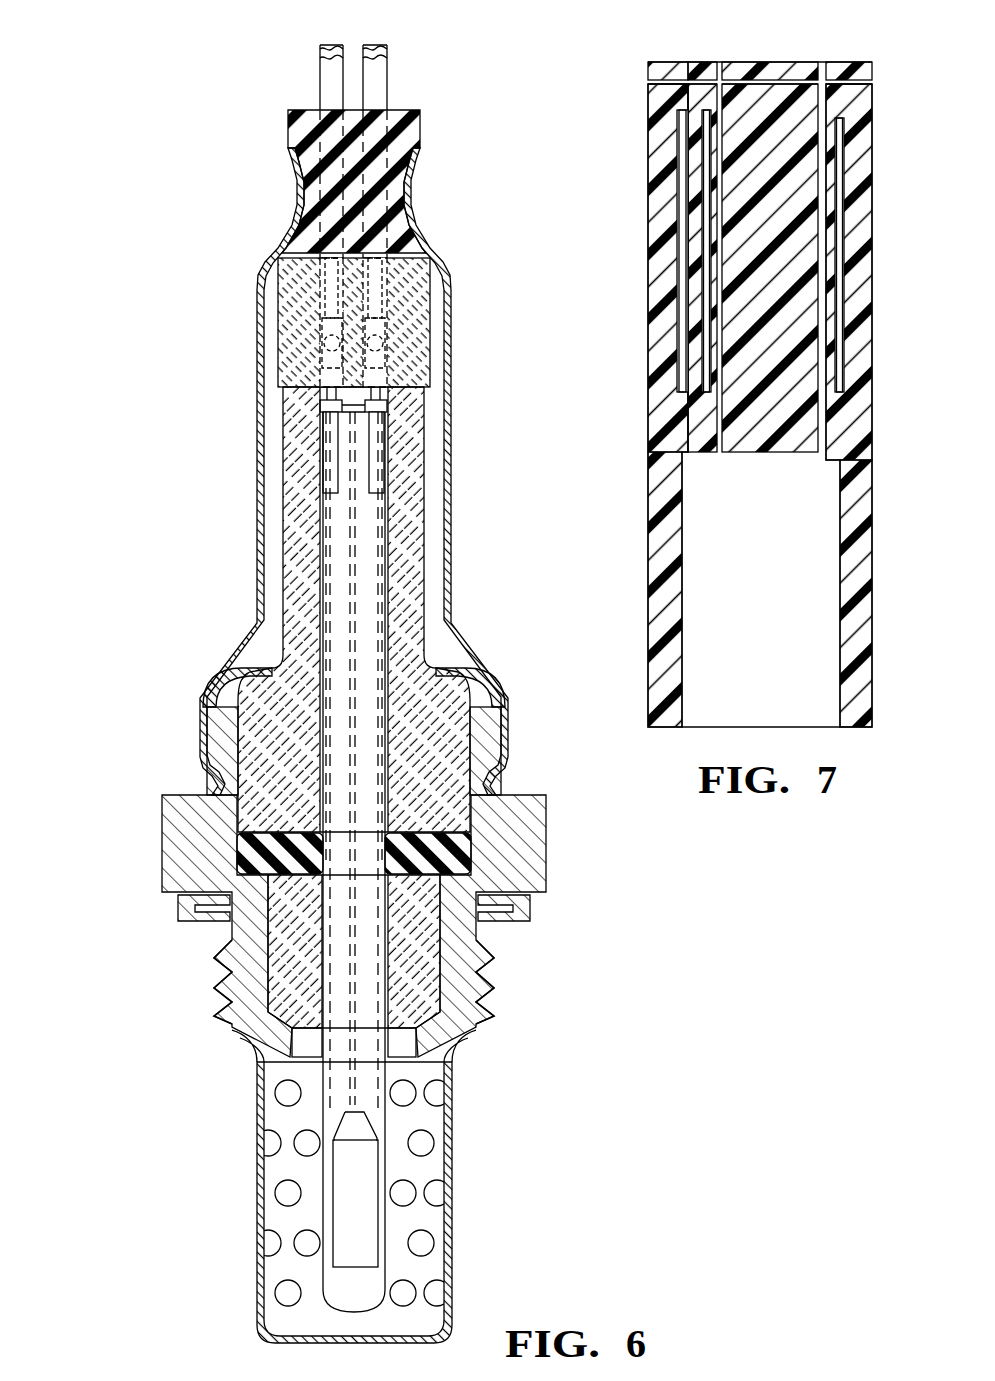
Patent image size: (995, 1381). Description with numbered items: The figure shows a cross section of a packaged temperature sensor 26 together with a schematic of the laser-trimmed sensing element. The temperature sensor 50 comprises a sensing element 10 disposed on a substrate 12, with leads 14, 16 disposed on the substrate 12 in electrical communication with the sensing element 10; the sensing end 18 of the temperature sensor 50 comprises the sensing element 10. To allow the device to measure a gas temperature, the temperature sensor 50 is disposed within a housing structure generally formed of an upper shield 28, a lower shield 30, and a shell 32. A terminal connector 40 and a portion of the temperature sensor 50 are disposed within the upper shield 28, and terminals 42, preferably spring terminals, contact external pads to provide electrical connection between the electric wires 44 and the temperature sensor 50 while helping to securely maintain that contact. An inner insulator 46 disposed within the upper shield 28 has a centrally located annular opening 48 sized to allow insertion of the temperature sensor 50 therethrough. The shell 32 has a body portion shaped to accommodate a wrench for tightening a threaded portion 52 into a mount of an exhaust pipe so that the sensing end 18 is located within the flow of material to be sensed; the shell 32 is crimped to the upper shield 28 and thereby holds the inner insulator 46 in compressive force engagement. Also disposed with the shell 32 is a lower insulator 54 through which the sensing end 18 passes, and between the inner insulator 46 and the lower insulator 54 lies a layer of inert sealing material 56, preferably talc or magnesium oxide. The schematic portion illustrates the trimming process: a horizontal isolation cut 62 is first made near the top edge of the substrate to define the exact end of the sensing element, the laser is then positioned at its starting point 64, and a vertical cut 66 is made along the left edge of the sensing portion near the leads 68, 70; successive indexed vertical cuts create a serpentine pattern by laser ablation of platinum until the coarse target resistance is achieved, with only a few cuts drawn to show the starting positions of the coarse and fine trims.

In FIG. 6, the sensing element 10 is at (370, 1218).
In FIG. 6, the substrate 12 is at (335, 1278).
In FIG. 6, the lead 14 is at (368, 563).
In FIG. 6, the lead 16 is at (340, 617).
In FIG. 6, the sensing end 18 is at (375, 1175).
In FIG. 6, the packaged temperature sensor 26 is at (160, 596).
In FIG. 6, the upper shield 28 is at (452, 348).
In FIG. 6, the lower shield 30 is at (258, 1237).
In FIG. 6, the shell 32 is at (170, 900).
In FIG. 6, the terminal connector 40 is at (288, 137).
In FIG. 6, the terminals 42 is at (323, 409).
In FIG. 6, the electric wires 44 is at (320, 87).
In FIG. 6, the inner insulator 46 is at (237, 712).
In FIG. 6, the annular opening 48 is at (323, 600).
In FIG. 6, the temperature sensor 50 is at (310, 1196).
In FIG. 6, the threaded portion 52 is at (225, 987).
In FIG. 6, the lower insulator 54 is at (268, 998).
In FIG. 6, the inert sealing material 56 is at (240, 866).
In FIG. 7, the horizontal isolation cut 62 is at (872, 80).
In FIG. 7, the starting point 64 is at (650, 478).
In FIG. 7, the vertical cut 66 is at (680, 198).
In FIG. 7, the lead 68 is at (652, 540).
In FIG. 7, the lead 70 is at (862, 540).